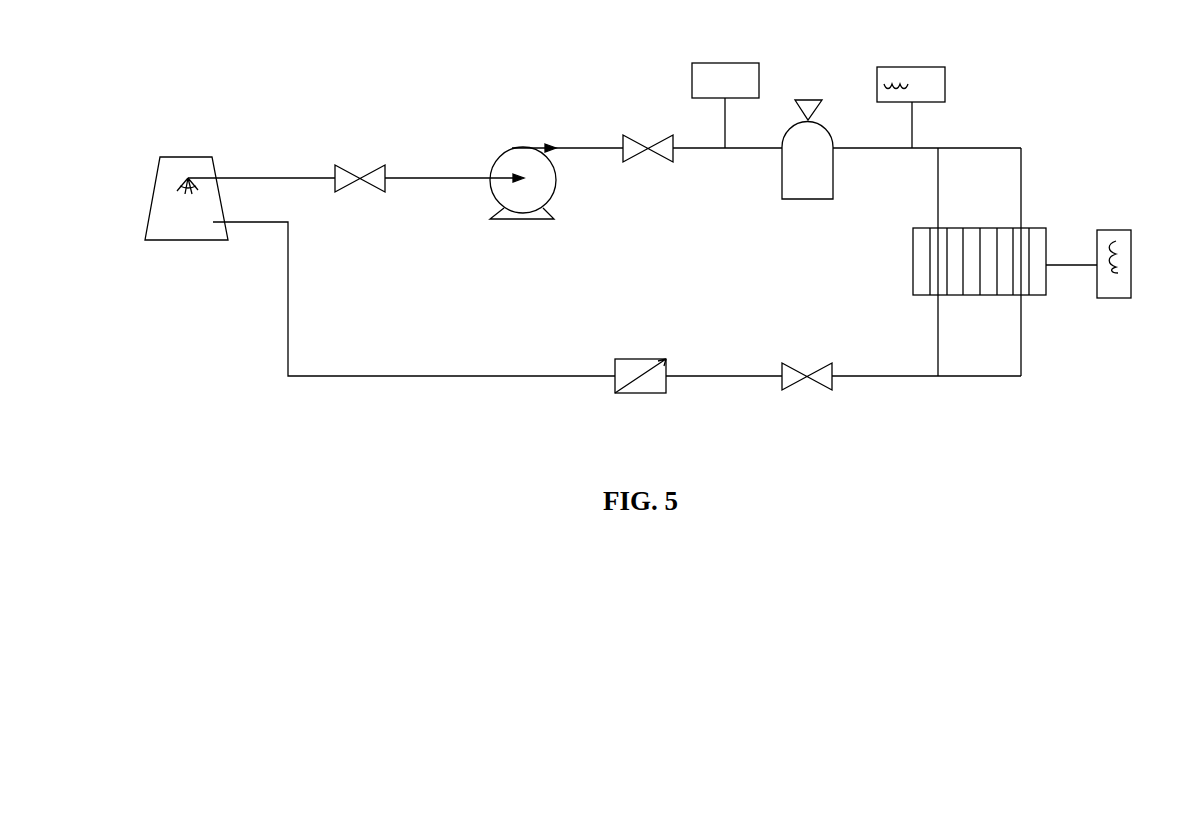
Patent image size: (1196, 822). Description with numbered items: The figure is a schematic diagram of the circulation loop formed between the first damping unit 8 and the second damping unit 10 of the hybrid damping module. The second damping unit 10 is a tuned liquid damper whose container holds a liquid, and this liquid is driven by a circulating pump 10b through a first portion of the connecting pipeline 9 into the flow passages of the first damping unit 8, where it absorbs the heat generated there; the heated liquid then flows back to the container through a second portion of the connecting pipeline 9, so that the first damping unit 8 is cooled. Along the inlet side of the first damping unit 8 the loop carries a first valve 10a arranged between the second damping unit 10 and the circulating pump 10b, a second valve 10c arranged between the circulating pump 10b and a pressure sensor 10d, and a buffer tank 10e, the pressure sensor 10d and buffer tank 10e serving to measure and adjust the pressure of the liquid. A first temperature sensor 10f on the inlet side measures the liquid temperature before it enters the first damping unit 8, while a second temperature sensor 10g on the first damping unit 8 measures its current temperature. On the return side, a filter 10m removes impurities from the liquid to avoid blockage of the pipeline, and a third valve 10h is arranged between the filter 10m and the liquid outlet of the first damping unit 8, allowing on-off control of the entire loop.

The first damping unit 8 is at (1046, 228).
The connecting pipeline 9 is at (591, 142).
The second damping unit 10 is at (186, 180).
The first valve 10a is at (364, 176).
The circulating pump 10b is at (530, 146).
The second valve 10c is at (648, 148).
The pressure sensor 10d is at (728, 62).
The buffer tank 10e is at (808, 100).
The first temperature sensor 10f is at (913, 66).
The second temperature sensor 10g is at (1133, 265).
The third valve 10h is at (816, 393).
The filter 10m is at (642, 396).